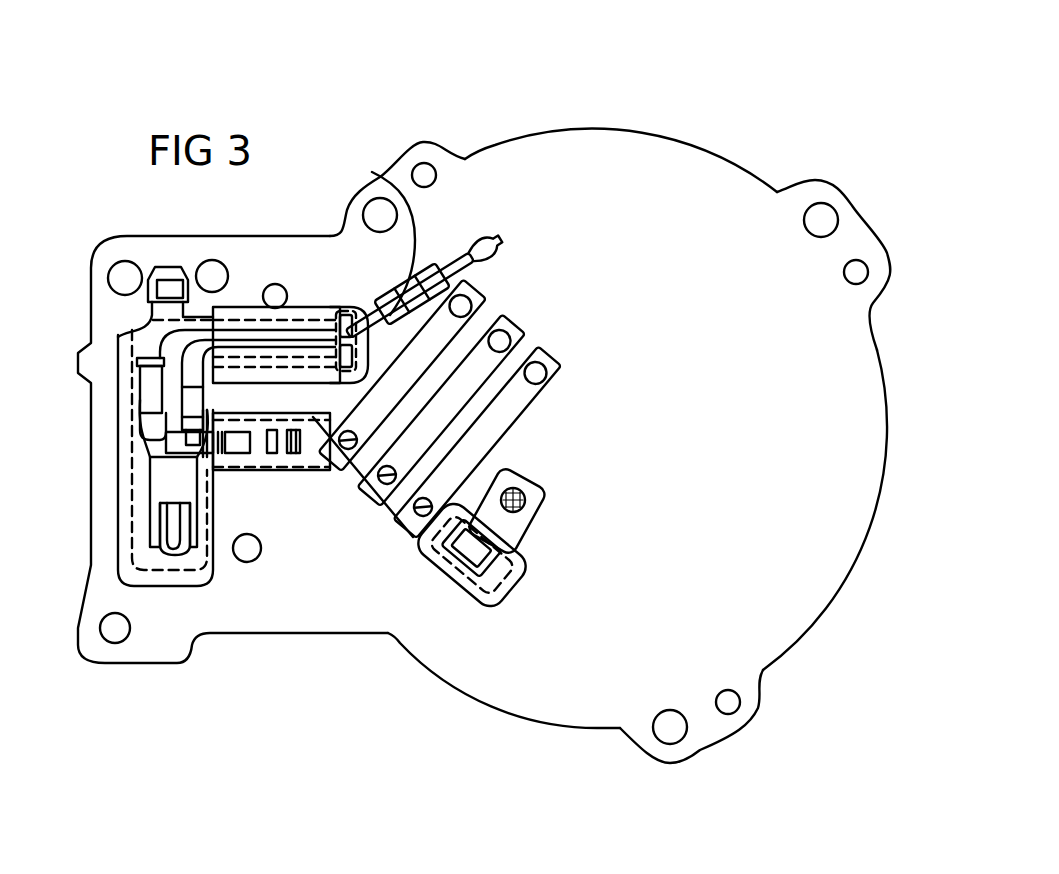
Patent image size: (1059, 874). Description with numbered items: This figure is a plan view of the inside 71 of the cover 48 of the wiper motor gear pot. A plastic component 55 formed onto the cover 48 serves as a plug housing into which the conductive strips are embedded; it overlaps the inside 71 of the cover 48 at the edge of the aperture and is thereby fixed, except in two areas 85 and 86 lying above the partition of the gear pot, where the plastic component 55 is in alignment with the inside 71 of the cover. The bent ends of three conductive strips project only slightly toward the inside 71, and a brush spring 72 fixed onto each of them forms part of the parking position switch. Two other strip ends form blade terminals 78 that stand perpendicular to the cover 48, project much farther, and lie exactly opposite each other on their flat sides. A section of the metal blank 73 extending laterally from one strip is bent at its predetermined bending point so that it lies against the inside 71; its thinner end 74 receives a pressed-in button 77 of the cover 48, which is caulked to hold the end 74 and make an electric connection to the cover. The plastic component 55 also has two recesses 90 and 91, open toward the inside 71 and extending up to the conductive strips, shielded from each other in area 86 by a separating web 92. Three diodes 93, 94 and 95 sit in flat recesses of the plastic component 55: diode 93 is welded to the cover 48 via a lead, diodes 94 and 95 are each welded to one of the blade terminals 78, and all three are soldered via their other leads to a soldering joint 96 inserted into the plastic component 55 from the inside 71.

The cover 48 is at (710, 118).
The inside of the cover 71 is at (787, 389).
The plastic component 55 is at (96, 460).
The diode 94 is at (145, 373).
The diode 95 is at (187, 400).
The area 85 is at (242, 318).
The soldering joint 96 is at (338, 318).
The diode 93 is at (372, 172).
The recess 90 is at (233, 438).
The area 86 is at (237, 462).
The recess 91 is at (293, 452).
The separating web 92 is at (277, 443).
The blade terminal 78 is at (138, 530).
The brush spring 72 is at (470, 302).
The end of the section of the metal blank 74 is at (530, 482).
The button 77 is at (525, 508).
The section of the metal blank 73 is at (508, 548).